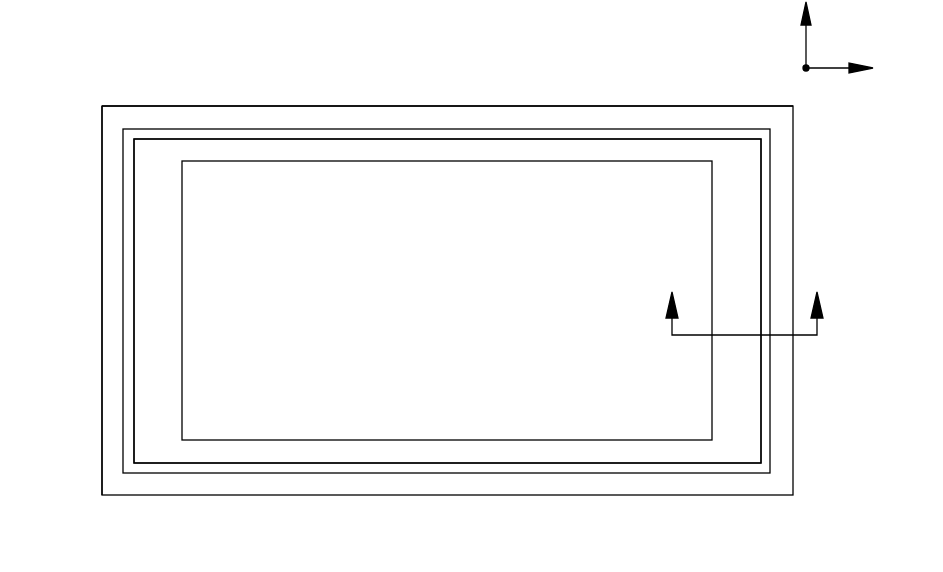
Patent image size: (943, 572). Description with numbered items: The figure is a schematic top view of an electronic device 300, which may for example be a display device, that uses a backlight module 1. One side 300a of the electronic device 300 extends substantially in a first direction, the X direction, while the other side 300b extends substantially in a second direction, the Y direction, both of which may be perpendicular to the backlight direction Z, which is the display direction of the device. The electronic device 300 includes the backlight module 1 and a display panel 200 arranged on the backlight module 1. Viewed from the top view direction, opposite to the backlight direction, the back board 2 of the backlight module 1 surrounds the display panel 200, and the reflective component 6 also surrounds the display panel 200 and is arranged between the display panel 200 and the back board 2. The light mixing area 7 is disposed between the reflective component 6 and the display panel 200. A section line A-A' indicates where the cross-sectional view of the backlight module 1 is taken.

The backlight module 1 is at (513, 101).
The electronic device 300 is at (76, 25).
The one side of the electronic device 300a is at (366, 106).
The other side of the electronic device 300b is at (102, 255).
The back board 2 is at (783, 178).
The reflective component 6 is at (763, 231).
The light mixing area 7 is at (158, 165).
The display panel 200 is at (297, 178).